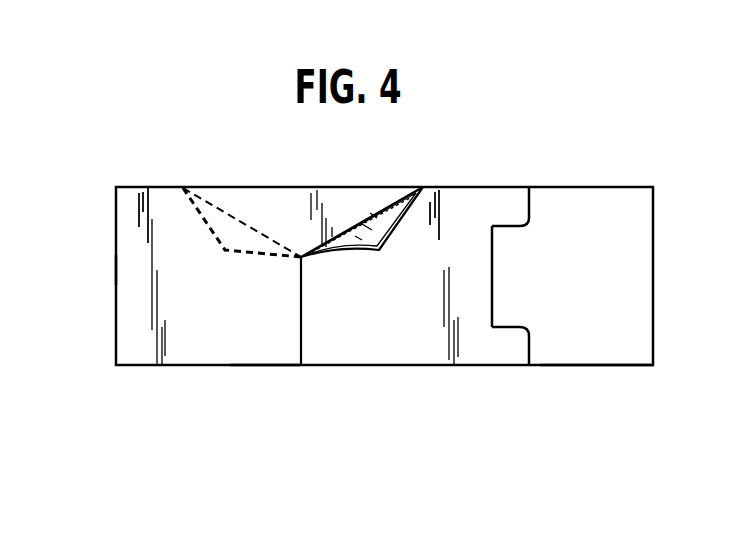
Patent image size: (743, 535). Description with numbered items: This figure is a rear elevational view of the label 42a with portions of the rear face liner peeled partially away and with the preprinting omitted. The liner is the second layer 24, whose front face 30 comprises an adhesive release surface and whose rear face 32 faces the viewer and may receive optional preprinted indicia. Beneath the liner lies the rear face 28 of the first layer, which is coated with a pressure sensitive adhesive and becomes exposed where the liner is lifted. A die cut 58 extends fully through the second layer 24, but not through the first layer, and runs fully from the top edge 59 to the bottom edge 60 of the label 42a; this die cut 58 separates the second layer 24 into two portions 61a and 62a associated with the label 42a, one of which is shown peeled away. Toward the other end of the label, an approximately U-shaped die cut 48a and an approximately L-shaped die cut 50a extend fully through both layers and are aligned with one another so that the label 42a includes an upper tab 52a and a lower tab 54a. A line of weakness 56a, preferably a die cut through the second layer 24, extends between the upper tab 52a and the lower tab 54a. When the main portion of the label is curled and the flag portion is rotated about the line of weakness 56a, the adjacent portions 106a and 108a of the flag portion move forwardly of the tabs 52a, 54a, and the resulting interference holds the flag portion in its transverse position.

The second layer 24 is at (202, 342).
The rear face of the first layer 28 is at (333, 202).
The front face of the second layer 30 is at (367, 213).
The rear face of the second layer 32 is at (423, 342).
The label 42a is at (148, 270).
The die cut 48a is at (530, 350).
The die cut 50a is at (528, 212).
The upper tab 52a is at (492, 210).
The lower tab 54a is at (495, 348).
The line of weakness 56a is at (492, 245).
The die cut 58 is at (302, 322).
The top edge 59 is at (220, 187).
The bottom edge 60 is at (263, 367).
The portion of the second layer 61a is at (462, 202).
The portion of the second layer 62a is at (163, 202).
The adjacent portion of the flag portion 106a is at (533, 219).
The adjacent portion of the flag portion 108a is at (530, 343).